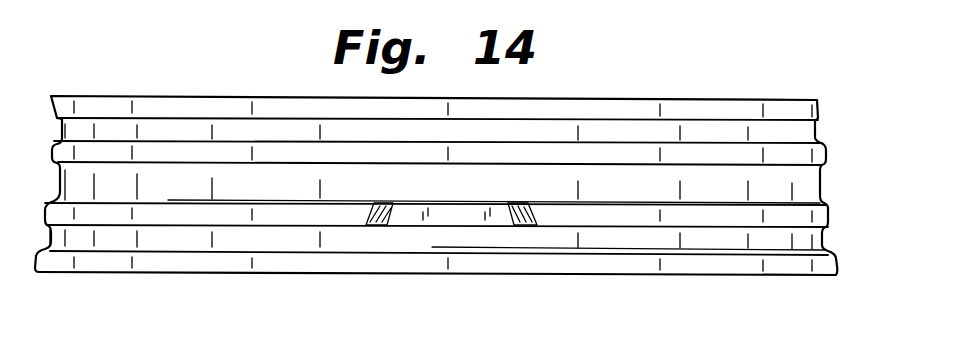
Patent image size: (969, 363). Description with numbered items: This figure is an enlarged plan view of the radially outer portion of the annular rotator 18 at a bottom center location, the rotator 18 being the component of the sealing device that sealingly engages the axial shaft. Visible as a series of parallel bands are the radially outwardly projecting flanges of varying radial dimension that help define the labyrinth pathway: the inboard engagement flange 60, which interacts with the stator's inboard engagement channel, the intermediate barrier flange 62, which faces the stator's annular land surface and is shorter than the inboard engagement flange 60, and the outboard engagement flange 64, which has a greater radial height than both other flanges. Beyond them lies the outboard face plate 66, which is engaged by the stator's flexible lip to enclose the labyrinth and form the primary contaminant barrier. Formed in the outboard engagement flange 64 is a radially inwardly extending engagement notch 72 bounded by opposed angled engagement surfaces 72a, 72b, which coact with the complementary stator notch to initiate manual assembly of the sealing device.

The annular rotator 18 is at (643, 84).
The inboard engagement flange 60 is at (718, 117).
The intermediate barrier flange 62 is at (781, 158).
The outboard engagement flange 64 is at (786, 214).
The outboard face plate 66 is at (681, 262).
The rotator engagement notch 72 is at (449, 212).
The angled engagement surface 72a is at (390, 220).
The angled engagement surface 72b is at (508, 226).